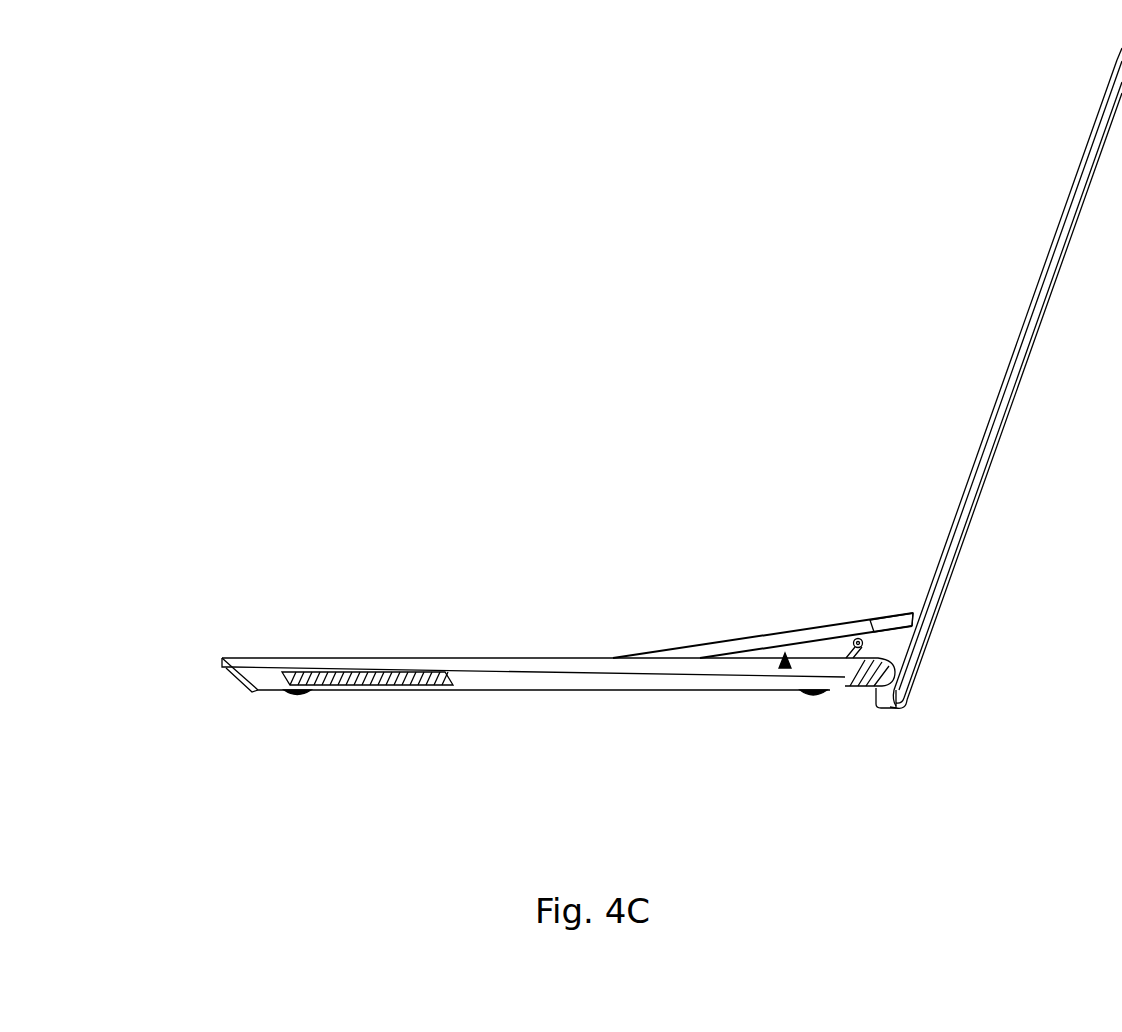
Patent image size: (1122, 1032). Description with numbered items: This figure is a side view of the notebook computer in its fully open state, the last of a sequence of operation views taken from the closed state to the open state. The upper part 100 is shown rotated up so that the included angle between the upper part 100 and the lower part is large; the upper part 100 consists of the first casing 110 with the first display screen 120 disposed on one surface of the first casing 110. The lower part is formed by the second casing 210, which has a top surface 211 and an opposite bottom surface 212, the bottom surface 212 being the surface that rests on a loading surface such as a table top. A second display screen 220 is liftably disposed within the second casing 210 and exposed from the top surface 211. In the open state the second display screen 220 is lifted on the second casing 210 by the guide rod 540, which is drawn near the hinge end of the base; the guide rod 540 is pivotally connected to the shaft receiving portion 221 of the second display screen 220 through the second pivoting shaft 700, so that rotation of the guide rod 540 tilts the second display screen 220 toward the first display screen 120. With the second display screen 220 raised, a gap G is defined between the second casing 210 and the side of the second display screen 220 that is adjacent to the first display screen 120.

The upper part 100 is at (1012, 22).
The first casing 110 is at (1121, 36).
The first display screen 120 is at (1107, 93).
The second casing 210 is at (137, 618).
The top surface 211 is at (264, 656).
The bottom surface 212 is at (276, 692).
The second display screen 220 is at (814, 622).
The shaft receiving portion 221 is at (890, 625).
The second pivoting shaft 700 is at (858, 638).
The guide rod 540 is at (838, 692).
The gap G is at (783, 672).